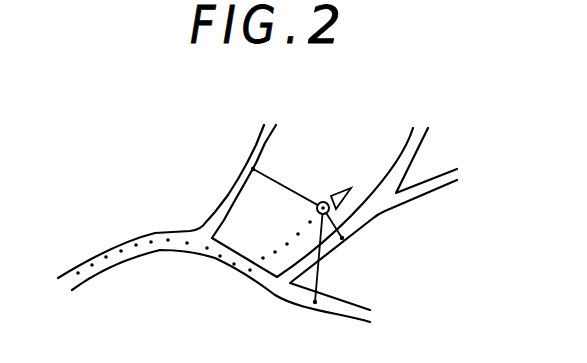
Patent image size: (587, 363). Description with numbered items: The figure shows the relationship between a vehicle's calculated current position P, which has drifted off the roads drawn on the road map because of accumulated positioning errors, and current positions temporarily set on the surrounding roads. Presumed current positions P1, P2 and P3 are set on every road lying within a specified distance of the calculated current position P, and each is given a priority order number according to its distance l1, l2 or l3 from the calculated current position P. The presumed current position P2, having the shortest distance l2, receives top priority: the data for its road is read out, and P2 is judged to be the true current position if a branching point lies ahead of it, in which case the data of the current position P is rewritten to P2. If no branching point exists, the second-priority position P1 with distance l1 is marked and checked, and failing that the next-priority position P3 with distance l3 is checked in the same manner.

The calculated current position P is at (325, 202).
The presumed current position P1 is at (234, 152).
The presumed current position P2 is at (356, 258).
The presumed current position P3 is at (307, 328).
The distance l1 is at (285, 179).
The distance l2 is at (333, 224).
The distance l3 is at (320, 296).